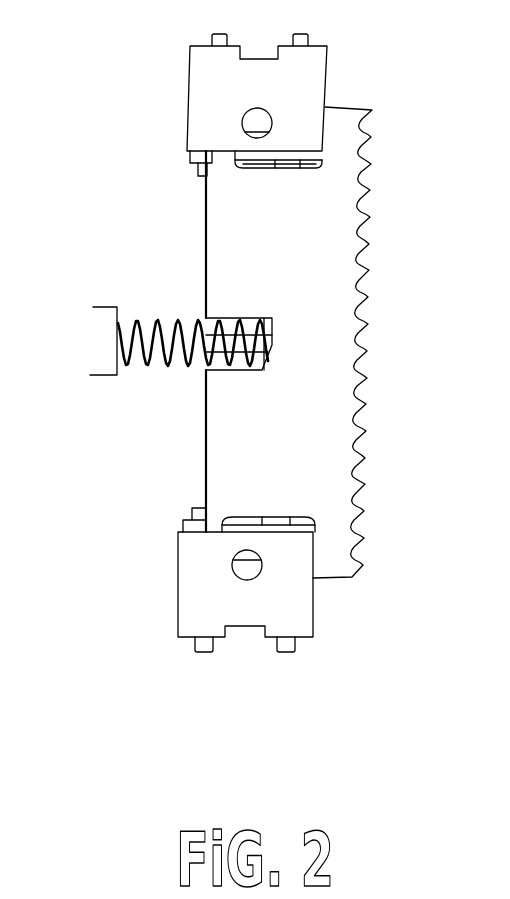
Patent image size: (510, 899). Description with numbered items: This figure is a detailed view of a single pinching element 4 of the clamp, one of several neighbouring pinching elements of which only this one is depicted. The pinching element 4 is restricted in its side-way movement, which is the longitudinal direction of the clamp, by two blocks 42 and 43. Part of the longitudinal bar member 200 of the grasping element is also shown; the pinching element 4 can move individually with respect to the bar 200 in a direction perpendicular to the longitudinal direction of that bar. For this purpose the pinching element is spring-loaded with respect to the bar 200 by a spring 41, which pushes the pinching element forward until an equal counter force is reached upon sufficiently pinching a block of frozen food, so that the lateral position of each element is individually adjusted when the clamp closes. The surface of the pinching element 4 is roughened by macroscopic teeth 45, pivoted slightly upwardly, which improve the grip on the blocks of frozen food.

The pinching element 4 is at (205, 457).
The spring 41 is at (168, 316).
The block 42 is at (313, 612).
The block 43 is at (327, 63).
The macroscopic teeth 45 is at (368, 325).
The longitudinal bar member 200 is at (93, 378).